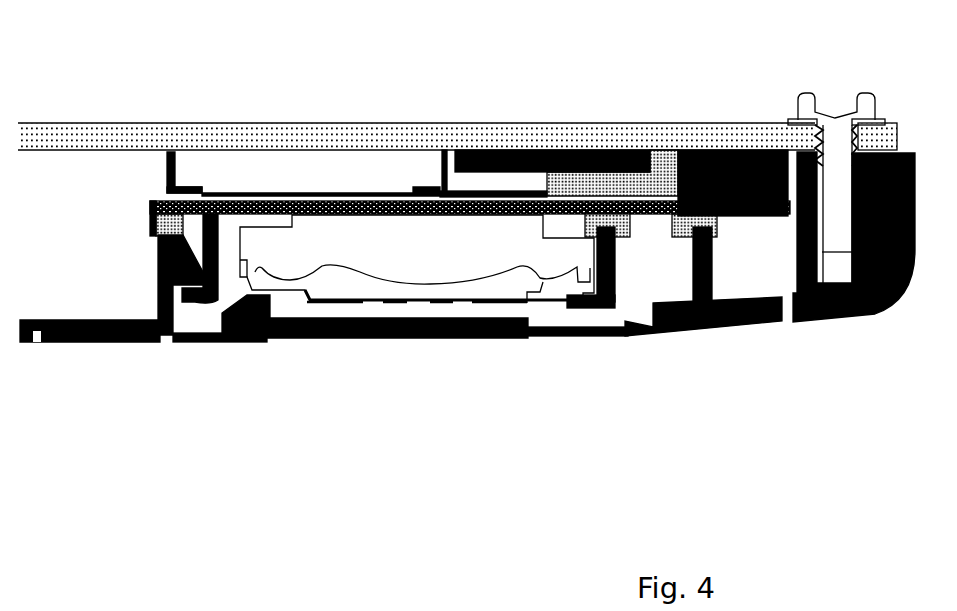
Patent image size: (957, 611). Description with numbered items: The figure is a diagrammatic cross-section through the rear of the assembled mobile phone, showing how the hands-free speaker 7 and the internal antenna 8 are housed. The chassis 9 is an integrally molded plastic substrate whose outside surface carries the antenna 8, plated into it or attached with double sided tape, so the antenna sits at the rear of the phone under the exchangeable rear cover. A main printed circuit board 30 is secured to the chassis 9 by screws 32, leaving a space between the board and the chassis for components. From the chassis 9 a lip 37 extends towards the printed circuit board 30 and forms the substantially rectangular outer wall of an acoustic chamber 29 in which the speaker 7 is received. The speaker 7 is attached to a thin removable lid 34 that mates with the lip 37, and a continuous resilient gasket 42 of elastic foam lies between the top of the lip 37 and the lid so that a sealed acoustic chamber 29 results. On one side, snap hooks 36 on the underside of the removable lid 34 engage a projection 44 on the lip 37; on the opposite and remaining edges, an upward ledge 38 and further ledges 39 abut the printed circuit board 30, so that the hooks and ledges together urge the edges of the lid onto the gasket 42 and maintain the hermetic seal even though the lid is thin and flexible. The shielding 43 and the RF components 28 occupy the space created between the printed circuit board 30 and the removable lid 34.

The hands-free speaker 7 is at (415, 263).
The internal antenna 8 is at (441, 330).
The chassis 9 is at (873, 320).
The RF components 28 is at (543, 150).
The acoustic chamber 29 is at (537, 302).
The main printed circuit board 30 is at (270, 132).
The screws 32 is at (838, 133).
The removable lid 34 is at (457, 202).
The snap hooks 36 is at (200, 302).
The lip 37 is at (160, 292).
The upward ledge 38 is at (772, 152).
The ledges 39 is at (690, 158).
The gasket 42 is at (152, 218).
The shielding 43 is at (217, 190).
The projection 44 is at (160, 268).